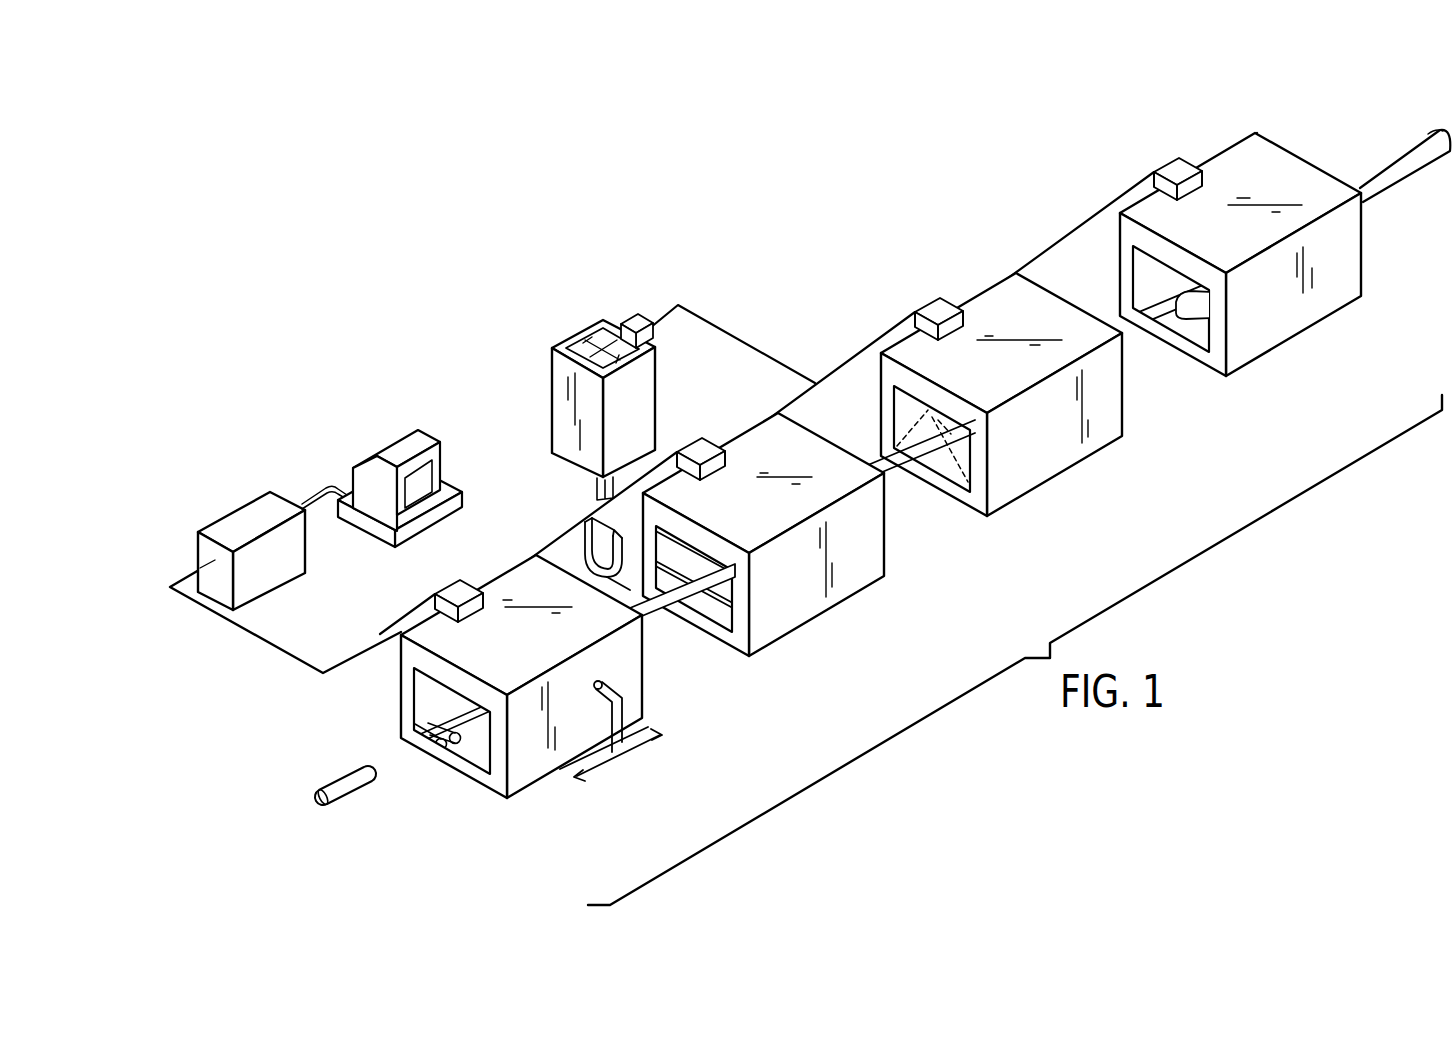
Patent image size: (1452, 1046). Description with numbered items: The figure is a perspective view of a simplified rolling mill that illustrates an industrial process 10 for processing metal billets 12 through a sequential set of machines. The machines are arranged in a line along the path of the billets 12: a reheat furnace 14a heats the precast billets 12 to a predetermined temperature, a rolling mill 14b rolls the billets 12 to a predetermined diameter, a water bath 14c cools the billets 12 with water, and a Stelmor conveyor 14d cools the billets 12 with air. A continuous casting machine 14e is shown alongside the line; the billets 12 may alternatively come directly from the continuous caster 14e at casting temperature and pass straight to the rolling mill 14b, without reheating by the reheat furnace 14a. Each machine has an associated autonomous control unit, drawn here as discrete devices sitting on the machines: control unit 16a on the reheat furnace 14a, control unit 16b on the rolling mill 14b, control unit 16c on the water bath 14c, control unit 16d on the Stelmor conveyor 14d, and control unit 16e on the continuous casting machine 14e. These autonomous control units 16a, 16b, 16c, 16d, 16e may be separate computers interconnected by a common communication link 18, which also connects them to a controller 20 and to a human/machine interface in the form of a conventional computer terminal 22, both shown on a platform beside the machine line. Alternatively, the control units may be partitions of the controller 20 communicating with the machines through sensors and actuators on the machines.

The industrial process 10 is at (1340, 90).
The metal billets 12 is at (337, 797).
The reheat furnace 14a is at (524, 766).
The rolling mill 14b is at (780, 624).
The water bath 14c is at (1015, 483).
The Stelmor conveyor 14d is at (1252, 343).
The continuous casting machine 14e is at (557, 418).
The autonomous control unit 16a is at (460, 593).
The autonomous control unit 16b is at (693, 448).
The autonomous control unit 16c is at (930, 312).
The autonomous control unit 16d is at (1172, 165).
The autonomous control unit 16e is at (628, 322).
The communication link 18 is at (815, 382).
The controller 20 is at (260, 507).
The computer terminal 22 is at (418, 438).